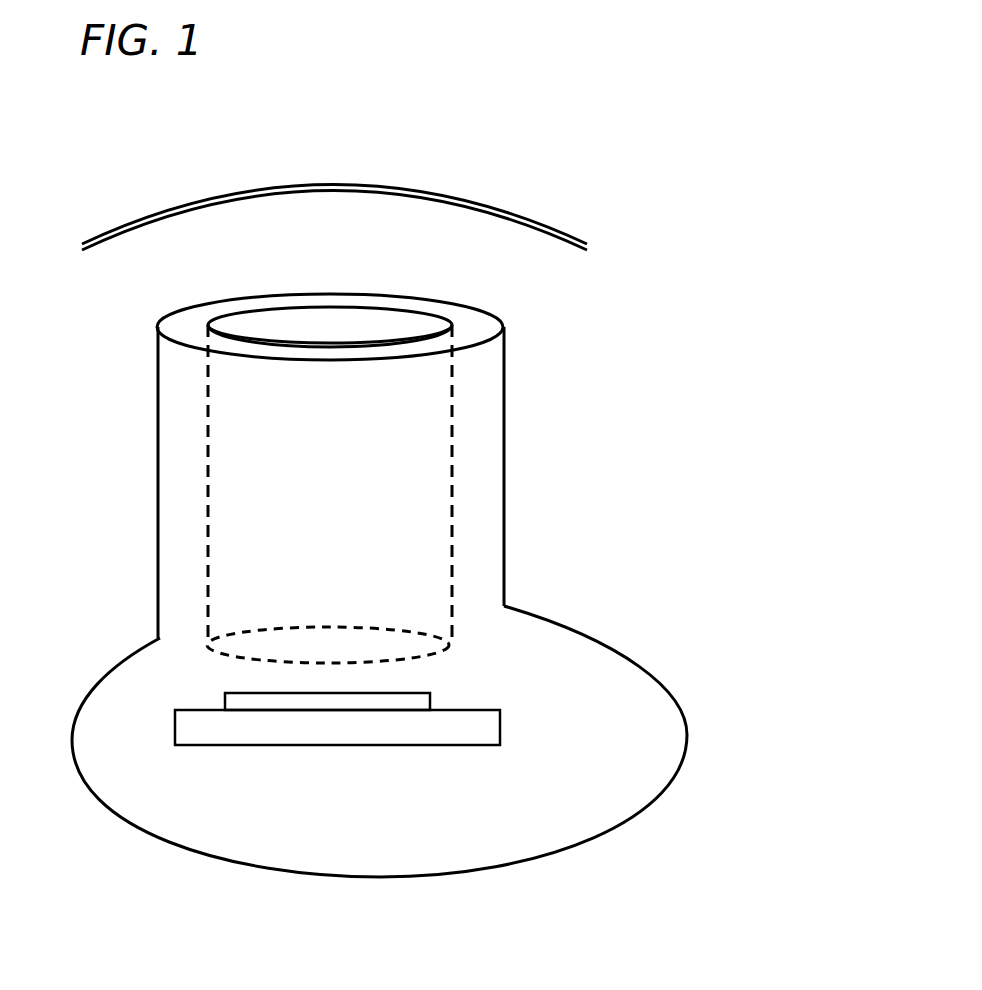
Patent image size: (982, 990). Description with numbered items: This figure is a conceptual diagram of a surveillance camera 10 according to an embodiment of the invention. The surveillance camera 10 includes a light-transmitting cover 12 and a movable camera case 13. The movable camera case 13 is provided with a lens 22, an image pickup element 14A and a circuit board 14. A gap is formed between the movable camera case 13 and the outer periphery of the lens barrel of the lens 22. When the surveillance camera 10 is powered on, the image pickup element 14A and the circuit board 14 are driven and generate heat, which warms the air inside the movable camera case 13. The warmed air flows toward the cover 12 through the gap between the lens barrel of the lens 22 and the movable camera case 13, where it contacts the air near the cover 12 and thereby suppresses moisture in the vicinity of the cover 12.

The surveillance camera 10 is at (705, 328).
The light-transmitting cover 12 is at (430, 187).
The movable camera case 13 is at (668, 677).
The circuit board 14 is at (463, 745).
The image pickup element 14A is at (407, 693).
The lens 22 is at (450, 473).